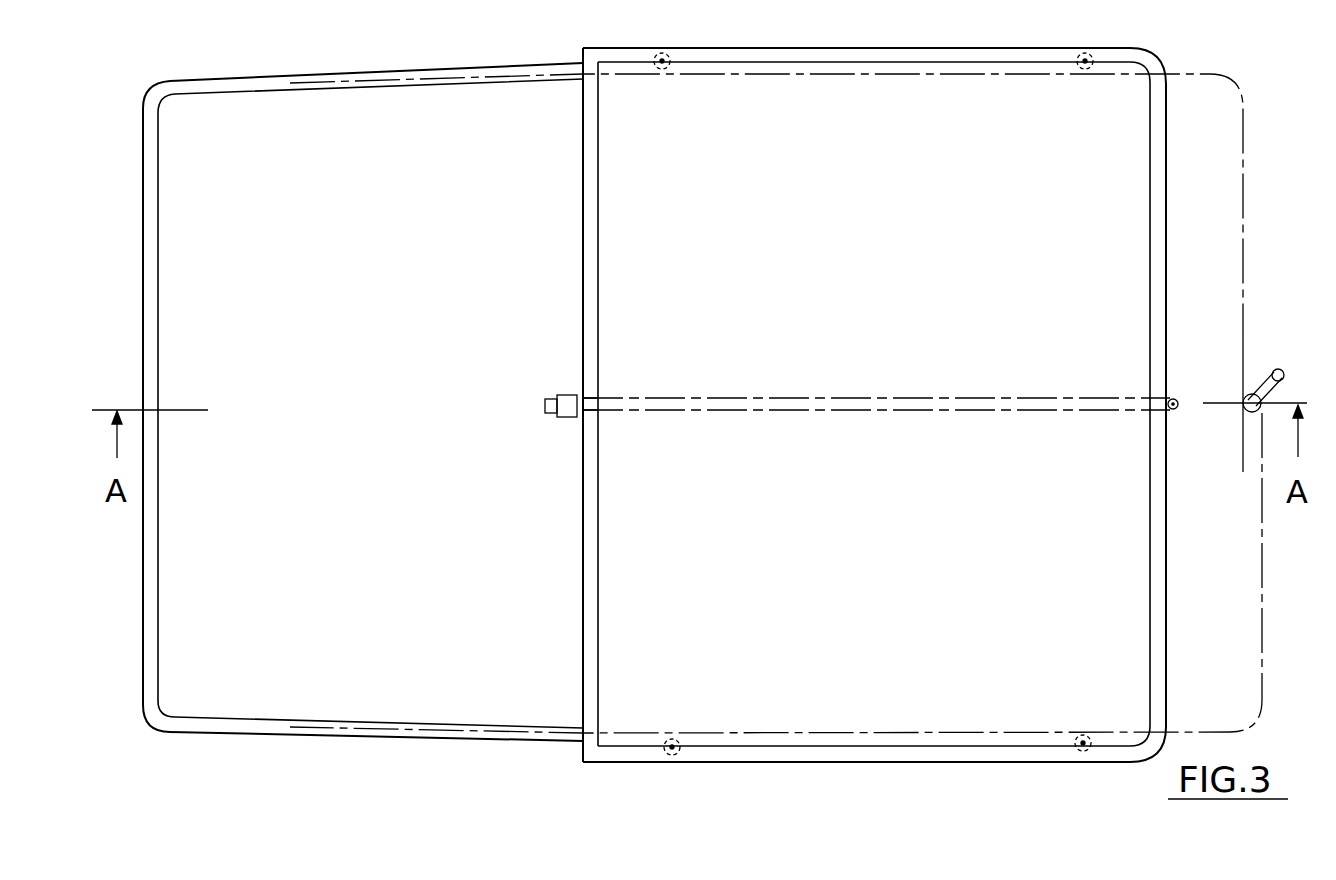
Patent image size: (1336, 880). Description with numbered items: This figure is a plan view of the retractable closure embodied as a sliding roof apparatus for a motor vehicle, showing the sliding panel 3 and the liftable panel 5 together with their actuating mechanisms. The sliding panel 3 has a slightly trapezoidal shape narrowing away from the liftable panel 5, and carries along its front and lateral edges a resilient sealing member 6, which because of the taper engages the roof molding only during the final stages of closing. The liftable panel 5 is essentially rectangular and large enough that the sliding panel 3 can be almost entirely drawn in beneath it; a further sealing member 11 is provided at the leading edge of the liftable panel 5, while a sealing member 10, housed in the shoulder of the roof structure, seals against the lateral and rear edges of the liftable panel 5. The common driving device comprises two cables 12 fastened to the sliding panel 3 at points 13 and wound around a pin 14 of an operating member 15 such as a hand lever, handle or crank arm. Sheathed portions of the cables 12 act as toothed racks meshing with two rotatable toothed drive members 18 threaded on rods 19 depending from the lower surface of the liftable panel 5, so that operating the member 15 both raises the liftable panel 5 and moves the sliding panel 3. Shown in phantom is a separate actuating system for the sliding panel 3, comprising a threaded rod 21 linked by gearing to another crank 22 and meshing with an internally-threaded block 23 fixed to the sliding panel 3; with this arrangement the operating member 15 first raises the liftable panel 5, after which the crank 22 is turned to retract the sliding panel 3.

The sliding panel 3 is at (446, 268).
The liftable panel 5 is at (874, 405).
The resilient sealing member 6 is at (345, 405).
The sealing member 10 is at (1163, 620).
The sealing member 11 is at (599, 358).
The cable 12 is at (907, 74).
The fastening point 13 is at (190, 80).
The pin 14 is at (1247, 412).
The operating member 15 is at (1280, 369).
The toothed drive member 18 is at (662, 54).
The rod 19 is at (662, 68).
The threaded rod 21 is at (1049, 397).
The crank 22 is at (1177, 402).
The internally-threaded block 23 is at (565, 395).